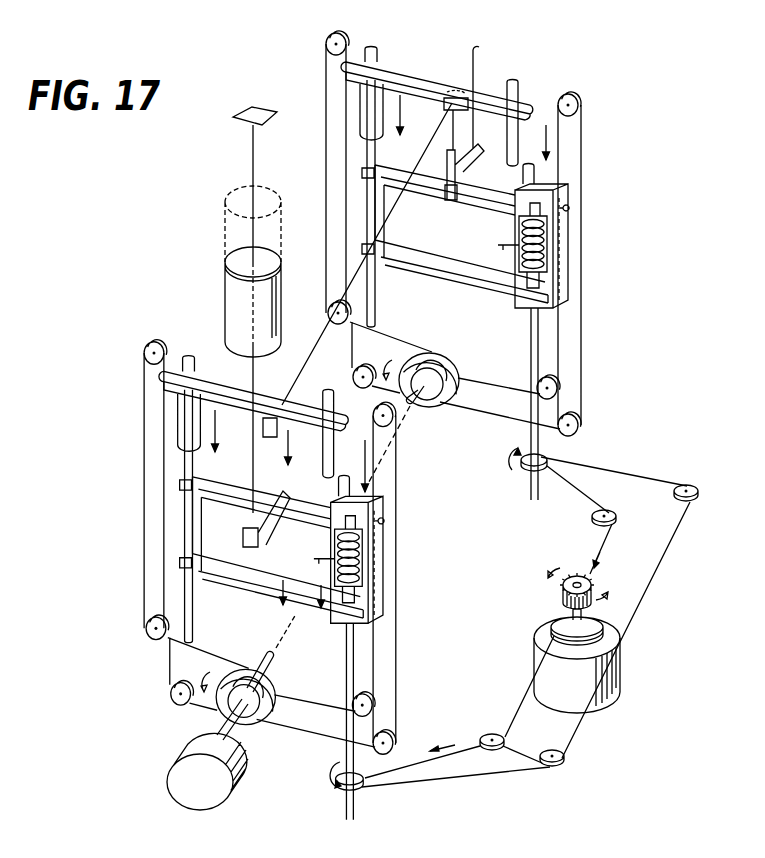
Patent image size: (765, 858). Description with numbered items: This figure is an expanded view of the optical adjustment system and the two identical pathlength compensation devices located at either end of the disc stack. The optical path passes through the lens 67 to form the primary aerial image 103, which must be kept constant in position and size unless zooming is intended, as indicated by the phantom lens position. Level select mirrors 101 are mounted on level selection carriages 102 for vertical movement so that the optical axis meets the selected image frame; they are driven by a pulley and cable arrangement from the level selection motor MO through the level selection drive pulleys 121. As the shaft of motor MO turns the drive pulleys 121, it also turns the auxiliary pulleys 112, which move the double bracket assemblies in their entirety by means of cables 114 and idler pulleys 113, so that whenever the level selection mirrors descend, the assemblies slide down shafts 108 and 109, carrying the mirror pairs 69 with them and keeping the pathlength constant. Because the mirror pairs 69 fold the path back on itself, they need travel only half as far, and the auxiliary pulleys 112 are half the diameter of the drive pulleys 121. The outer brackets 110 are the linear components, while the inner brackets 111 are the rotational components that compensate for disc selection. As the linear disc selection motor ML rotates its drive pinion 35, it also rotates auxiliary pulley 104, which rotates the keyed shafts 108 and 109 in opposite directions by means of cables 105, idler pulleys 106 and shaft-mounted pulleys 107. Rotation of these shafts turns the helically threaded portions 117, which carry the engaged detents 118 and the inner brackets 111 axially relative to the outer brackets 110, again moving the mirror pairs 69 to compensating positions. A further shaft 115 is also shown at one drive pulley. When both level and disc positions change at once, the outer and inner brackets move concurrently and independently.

The drive pinion 35 is at (592, 585).
The lens 67 is at (228, 304).
The paired mirrors 69 is at (452, 200).
The level select mirrors 101 is at (444, 104).
The level selection tables or carriages 102 is at (418, 74).
The primary aerial image 103 is at (262, 110).
The auxiliary pulley 104 is at (620, 630).
The cables 105 is at (592, 736).
The idler pulleys 106 is at (695, 490).
The shaft-mounted pulleys 107 is at (548, 462).
The shaft 108 is at (530, 487).
The shaft 109 is at (330, 770).
The outer brackets 110 is at (565, 258).
The inner brackets 111 is at (300, 515).
The auxiliary pulleys 112 is at (452, 398).
The idler pulleys 113 is at (578, 106).
The cables 114 is at (582, 310).
The shaft 115 is at (266, 655).
The helically threaded portion of the tubes 117 is at (540, 243).
The detents 118 is at (506, 245).
The level selection drive pulleys 121 is at (450, 368).
The level selection motor MO is at (175, 782).
The linear disc selection motor ML is at (615, 692).